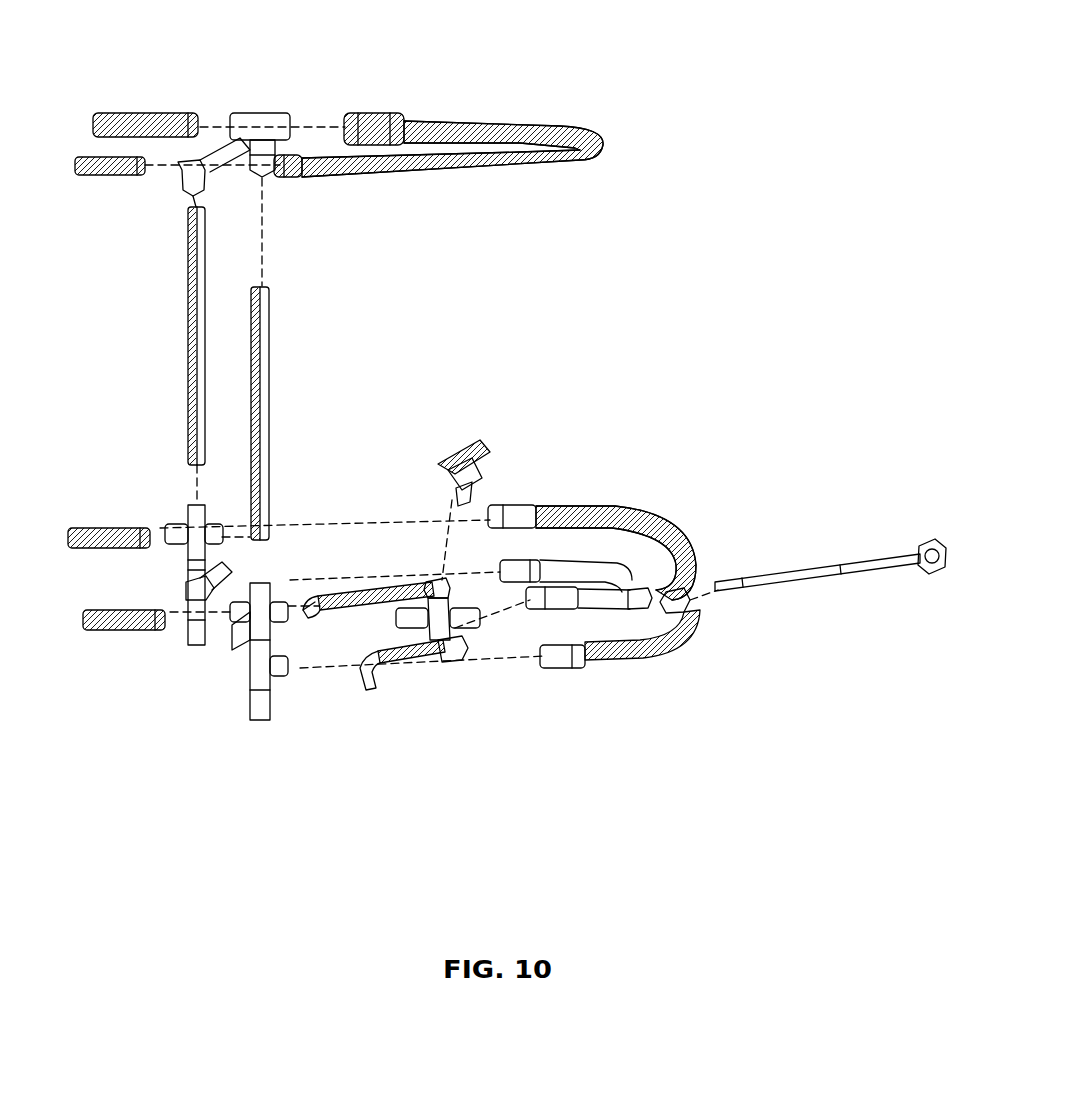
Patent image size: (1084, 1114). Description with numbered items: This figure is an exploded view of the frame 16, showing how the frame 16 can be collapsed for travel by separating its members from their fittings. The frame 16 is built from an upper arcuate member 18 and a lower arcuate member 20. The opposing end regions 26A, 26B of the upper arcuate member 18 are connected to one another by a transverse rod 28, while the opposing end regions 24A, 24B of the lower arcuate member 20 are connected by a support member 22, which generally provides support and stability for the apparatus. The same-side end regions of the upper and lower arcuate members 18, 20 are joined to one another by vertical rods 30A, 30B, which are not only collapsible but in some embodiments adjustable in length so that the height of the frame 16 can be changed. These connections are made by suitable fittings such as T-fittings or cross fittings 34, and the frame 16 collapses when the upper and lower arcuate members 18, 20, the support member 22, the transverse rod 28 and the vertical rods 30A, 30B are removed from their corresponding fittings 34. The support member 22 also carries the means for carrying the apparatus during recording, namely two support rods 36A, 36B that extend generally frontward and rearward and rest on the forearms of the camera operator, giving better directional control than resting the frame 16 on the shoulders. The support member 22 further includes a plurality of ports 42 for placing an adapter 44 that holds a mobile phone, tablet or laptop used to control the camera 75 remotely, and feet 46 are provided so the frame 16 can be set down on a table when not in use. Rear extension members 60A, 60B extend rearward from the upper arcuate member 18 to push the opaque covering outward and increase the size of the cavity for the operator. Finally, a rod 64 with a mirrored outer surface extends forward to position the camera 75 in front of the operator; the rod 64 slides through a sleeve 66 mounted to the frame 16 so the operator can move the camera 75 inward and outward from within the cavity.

The frame 16 is at (692, 82).
The upper arcuate member 18 is at (578, 150).
The lower arcuate member 20 is at (660, 518).
The support member 22 is at (336, 758).
The end region 24A is at (565, 600).
The end region 24B is at (515, 508).
The end region 26A is at (372, 112).
The end region 26B is at (285, 170).
The transverse rod 28 is at (225, 176).
The vertical rod 30A is at (268, 395).
The vertical rod 30B is at (190, 350).
The cross fitting 34 is at (262, 110).
The support rod 36A is at (405, 670).
The support rod 36B is at (385, 596).
The port 42 is at (450, 608).
The adapter 44 is at (482, 490).
The feet 46 is at (250, 712).
The rear extension member 60A is at (148, 112).
The rear extension member 60B is at (112, 178).
The rod 64 is at (815, 572).
The sleeve 66 is at (688, 606).
The camera 75 is at (922, 512).